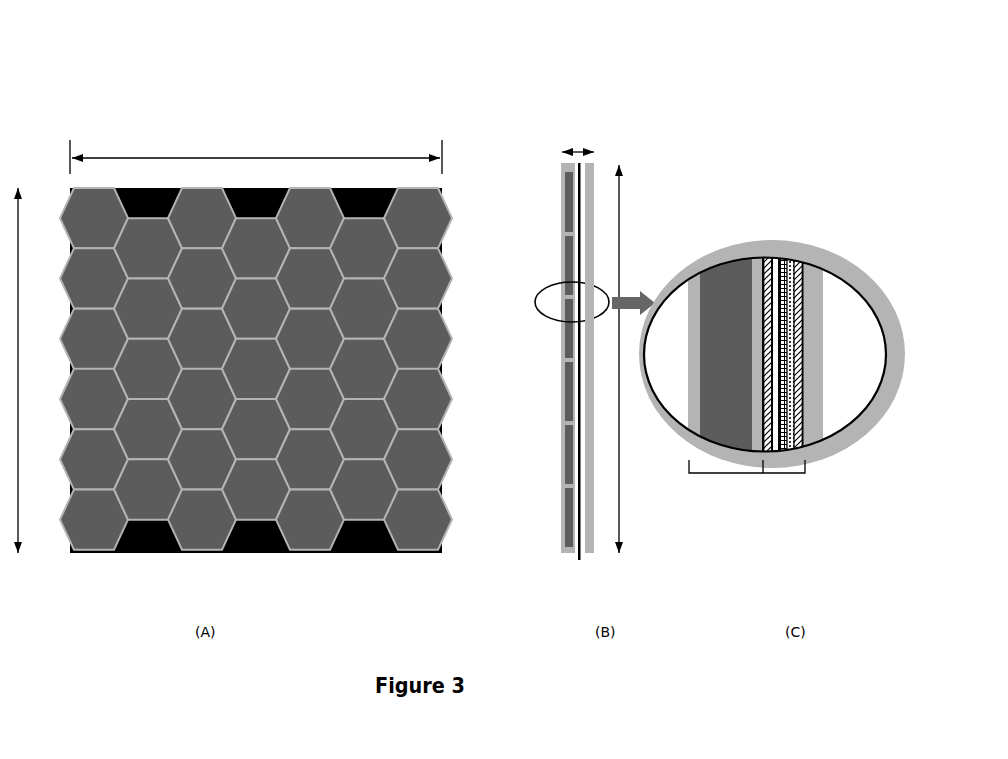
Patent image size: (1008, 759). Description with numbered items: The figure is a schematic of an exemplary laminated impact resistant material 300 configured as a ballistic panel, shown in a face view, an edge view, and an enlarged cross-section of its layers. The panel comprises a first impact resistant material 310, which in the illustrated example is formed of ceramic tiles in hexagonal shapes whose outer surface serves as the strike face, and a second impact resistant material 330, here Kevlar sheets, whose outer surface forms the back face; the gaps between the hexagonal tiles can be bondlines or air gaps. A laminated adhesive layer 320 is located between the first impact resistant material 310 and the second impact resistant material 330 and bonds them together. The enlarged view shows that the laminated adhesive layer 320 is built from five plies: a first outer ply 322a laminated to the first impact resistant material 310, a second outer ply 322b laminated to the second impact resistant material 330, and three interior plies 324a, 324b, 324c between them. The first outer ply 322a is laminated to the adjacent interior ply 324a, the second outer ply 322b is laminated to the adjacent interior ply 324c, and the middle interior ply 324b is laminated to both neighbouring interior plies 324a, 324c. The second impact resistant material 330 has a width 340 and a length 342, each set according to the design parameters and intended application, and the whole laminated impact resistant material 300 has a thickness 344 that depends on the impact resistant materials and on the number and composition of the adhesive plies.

The laminated impact resistant material 300 is at (138, 80).
The first impact resistant material 310 is at (425, 386).
The laminated adhesive layer 320 is at (577, 560).
The first outer ply 322a is at (766, 258).
The second outer ply 322b is at (803, 258).
The interior ply 324a is at (775, 258).
The interior ply 324b is at (783, 258).
The interior ply 324c is at (800, 258).
The second impact resistant material 330 is at (590, 254).
The width 340 is at (232, 157).
The length 342 is at (18, 522).
The thickness 344 is at (576, 146).